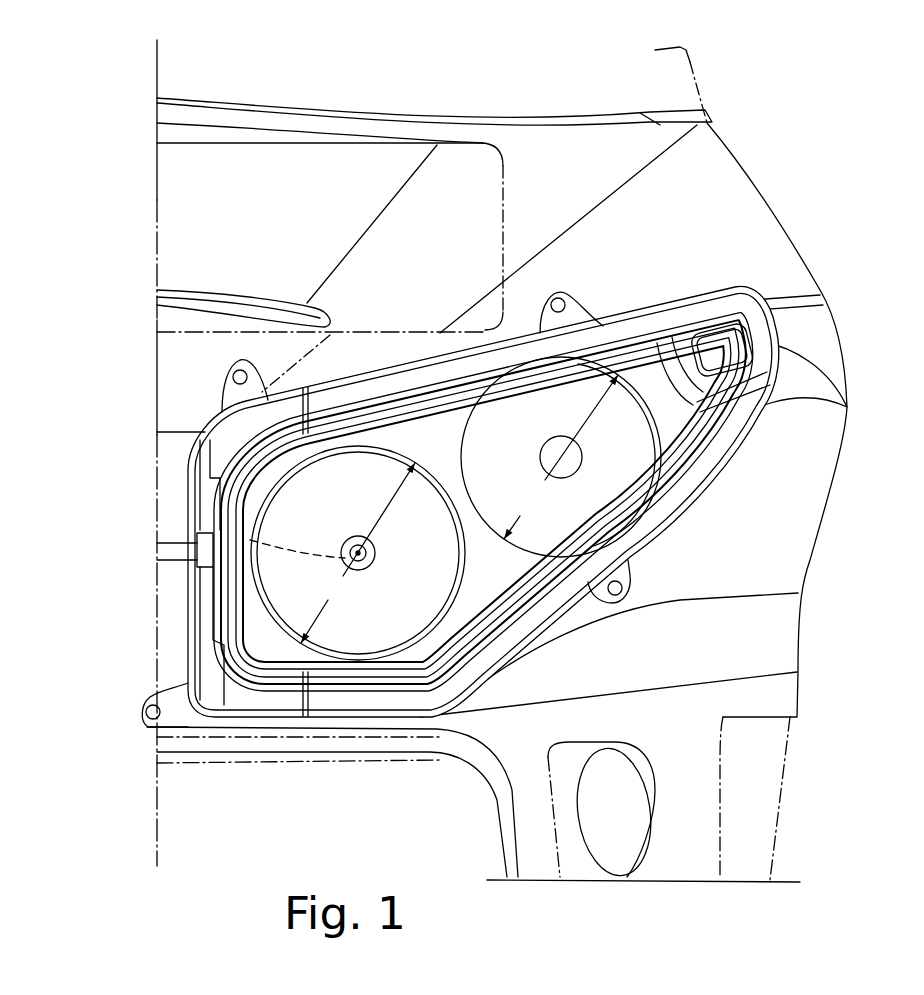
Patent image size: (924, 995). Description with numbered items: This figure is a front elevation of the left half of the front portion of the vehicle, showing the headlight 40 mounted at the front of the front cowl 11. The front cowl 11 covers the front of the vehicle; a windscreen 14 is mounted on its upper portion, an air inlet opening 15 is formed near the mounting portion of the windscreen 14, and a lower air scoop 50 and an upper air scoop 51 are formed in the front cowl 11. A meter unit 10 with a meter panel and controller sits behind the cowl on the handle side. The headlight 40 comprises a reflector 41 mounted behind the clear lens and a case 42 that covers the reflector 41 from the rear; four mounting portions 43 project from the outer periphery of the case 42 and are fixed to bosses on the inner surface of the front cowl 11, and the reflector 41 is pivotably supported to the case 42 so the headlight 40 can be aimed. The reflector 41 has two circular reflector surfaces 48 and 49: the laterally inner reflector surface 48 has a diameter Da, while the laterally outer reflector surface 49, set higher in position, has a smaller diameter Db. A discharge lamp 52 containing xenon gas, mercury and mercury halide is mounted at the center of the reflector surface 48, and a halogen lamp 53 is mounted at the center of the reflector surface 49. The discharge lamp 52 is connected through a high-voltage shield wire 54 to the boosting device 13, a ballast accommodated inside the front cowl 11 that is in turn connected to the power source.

The meter unit 10 is at (504, 172).
The front cowl 11 is at (787, 553).
The boosting device (ballast) 13 is at (205, 518).
The windscreen 14 is at (690, 62).
The air inlet opening 15 is at (200, 310).
The headlight 40 is at (483, 533).
The reflector 41 is at (622, 332).
The case 42 is at (668, 530).
The mounting portions 43 is at (565, 289).
The reflector surface 48 is at (404, 552).
The reflector surface 49 is at (601, 456).
The lower air scoop 50 is at (625, 808).
The upper air scoop 51 is at (849, 409).
The discharge lamp 52 is at (365, 568).
The halogen lamp 53 is at (547, 453).
The high-voltage shield wire 54 is at (290, 540).
The diameter of reflector surface 48 Da is at (358, 553).
The diameter of reflector surface 49 Db is at (561, 457).